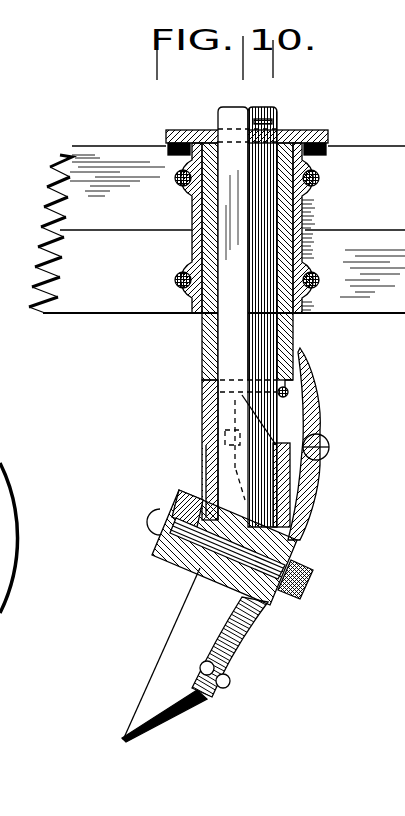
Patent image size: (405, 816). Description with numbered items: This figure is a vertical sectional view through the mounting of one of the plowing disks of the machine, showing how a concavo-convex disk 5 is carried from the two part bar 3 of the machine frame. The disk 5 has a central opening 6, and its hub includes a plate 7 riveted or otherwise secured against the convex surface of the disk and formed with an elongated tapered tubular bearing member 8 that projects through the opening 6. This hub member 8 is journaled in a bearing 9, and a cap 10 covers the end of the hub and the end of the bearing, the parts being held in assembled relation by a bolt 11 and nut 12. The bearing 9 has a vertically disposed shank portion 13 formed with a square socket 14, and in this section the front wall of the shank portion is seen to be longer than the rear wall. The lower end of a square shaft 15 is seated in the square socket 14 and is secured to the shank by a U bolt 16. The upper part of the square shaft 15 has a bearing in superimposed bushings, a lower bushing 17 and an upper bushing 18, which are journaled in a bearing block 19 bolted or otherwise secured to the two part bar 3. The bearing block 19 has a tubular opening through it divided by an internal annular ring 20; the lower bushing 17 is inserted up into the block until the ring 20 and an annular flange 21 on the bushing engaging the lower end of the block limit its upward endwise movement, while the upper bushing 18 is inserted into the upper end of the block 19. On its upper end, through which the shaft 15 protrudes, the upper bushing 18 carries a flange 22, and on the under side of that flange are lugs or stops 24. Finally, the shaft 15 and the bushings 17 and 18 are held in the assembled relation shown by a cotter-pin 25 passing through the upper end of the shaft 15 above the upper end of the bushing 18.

The two part bar 3 is at (80, 217).
The concavo-convex disk 5 is at (160, 677).
The central opening 6 is at (308, 522).
The plate 7 is at (247, 652).
The tubular bearing member 8 is at (177, 560).
The bearing 9 is at (238, 586).
The cap 10 is at (178, 497).
The bolt 11 is at (150, 527).
The nut 12 is at (308, 570).
The shank portion 13 is at (202, 412).
The square socket 14 is at (288, 481).
The square shaft 15 is at (220, 114).
The U bolt 16 is at (289, 392).
The lower bushing 17 is at (294, 339).
The upper bushing 18 is at (303, 213).
The bearing block 19 is at (325, 182).
The internal annular ring 20 is at (190, 233).
The annular flange 21 is at (192, 318).
The flange 22 is at (305, 129).
The lugs or stops 24 is at (167, 146).
The cotter-pin 25 is at (268, 121).